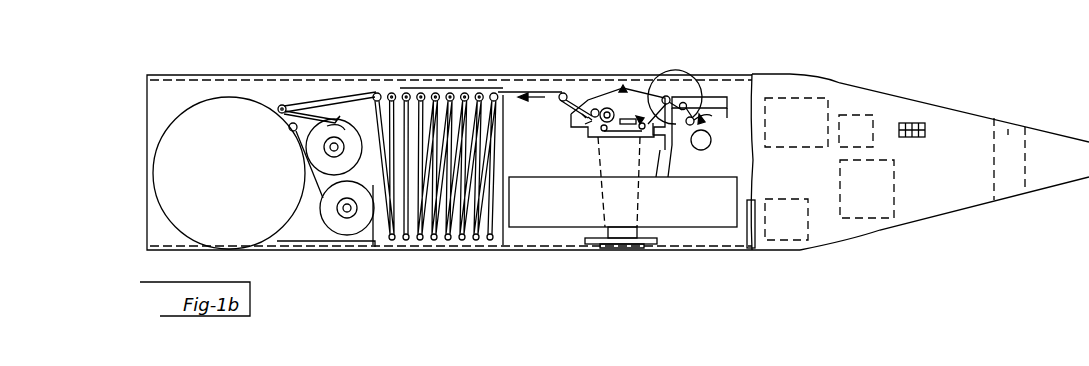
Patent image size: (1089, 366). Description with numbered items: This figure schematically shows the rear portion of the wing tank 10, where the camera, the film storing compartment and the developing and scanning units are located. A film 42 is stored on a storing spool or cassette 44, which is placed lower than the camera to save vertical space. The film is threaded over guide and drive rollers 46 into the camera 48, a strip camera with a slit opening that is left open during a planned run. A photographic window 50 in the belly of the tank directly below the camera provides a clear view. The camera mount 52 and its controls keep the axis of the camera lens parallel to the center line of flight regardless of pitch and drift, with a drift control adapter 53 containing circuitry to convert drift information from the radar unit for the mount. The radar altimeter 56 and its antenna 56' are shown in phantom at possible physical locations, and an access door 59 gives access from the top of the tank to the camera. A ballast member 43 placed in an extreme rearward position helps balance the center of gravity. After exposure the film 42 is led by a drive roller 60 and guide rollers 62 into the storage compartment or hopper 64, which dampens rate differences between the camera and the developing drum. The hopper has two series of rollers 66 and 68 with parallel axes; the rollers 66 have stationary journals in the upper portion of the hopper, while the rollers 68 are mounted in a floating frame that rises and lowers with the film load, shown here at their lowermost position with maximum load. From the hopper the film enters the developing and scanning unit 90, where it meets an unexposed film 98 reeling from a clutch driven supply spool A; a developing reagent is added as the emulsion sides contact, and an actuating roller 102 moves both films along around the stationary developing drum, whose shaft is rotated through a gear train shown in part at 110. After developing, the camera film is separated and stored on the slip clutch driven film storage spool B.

The cartridge housing 10 is at (782, 70).
The developing and scanning unit 90 is at (224, 96).
The actuating roller 102 is at (282, 105).
The unexposed film 98 is at (318, 120).
The film 42 is at (345, 122).
The film storage spool B is at (353, 228).
The supply spool A is at (378, 92).
The rollers 68 is at (402, 80).
The storage compartment or hopper 64 is at (460, 84).
The rollers 66 is at (496, 90).
The gear train 110 is at (500, 242).
The guide rollers 62 is at (565, 92).
The drive roller 60 is at (608, 108).
The camera 48 is at (633, 98).
The camera mount 52 is at (592, 181).
The photographic window 50 is at (631, 249).
The guide and drive rollers 46 is at (669, 97).
The storing spool or cassette 44 is at (686, 150).
The drift control adapter 53 is at (871, 110).
The access door 59 is at (659, 80).
The ballast member 43 is at (1012, 117).
The radar altimeter 56 is at (878, 208).
The antenna 56' is at (786, 240).